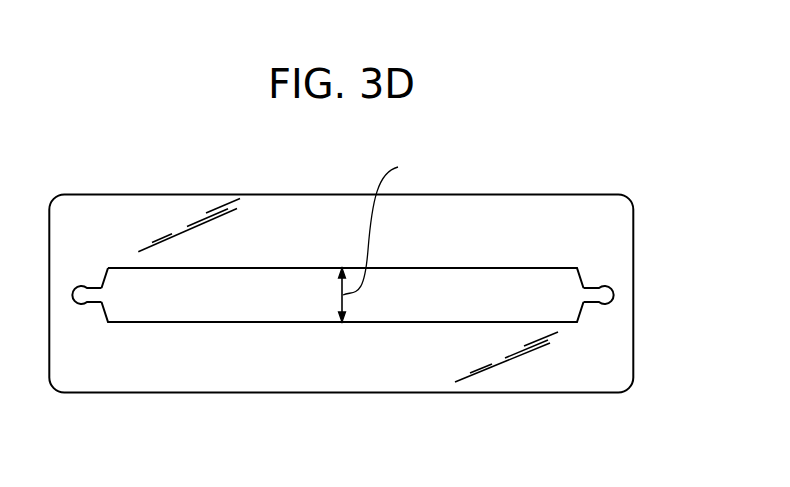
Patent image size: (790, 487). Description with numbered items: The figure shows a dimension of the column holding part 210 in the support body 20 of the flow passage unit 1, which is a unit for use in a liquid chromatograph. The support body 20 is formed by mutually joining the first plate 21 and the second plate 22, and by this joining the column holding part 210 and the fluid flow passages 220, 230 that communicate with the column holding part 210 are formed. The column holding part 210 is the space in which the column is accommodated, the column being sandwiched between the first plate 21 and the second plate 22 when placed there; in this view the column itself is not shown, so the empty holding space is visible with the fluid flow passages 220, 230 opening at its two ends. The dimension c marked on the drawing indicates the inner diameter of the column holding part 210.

The flow passage unit 1 is at (636, 154).
The support body 20 is at (542, 381).
The first plate 21 is at (341, 294).
The second plate 22 is at (341, 294).
The column holding part 210 is at (483, 282).
The fluid flow passage 220 is at (585, 290).
The fluid flow passage 230 is at (97, 290).